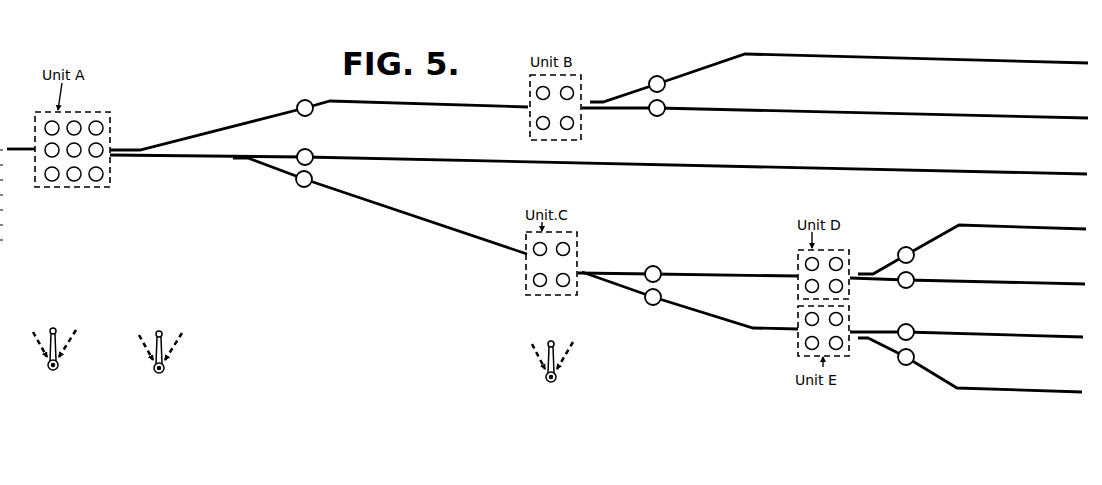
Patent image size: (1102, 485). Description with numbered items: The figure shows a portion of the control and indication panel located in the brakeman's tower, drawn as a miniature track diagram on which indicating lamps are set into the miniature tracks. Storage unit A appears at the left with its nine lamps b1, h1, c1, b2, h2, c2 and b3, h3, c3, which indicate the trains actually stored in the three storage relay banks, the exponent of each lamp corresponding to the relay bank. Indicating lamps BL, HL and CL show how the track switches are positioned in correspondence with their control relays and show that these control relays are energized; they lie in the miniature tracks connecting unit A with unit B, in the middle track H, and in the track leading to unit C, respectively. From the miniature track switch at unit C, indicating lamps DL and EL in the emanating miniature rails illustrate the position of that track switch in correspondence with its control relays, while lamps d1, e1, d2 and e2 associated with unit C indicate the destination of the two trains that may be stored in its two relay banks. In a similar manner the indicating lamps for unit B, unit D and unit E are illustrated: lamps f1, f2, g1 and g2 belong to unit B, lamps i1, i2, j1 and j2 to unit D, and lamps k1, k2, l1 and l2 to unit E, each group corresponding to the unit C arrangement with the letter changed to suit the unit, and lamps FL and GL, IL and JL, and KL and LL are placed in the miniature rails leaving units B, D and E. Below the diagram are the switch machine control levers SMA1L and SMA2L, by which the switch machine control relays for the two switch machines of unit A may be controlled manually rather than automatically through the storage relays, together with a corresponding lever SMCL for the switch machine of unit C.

The indicating lamp BL is at (311, 104).
The indicating lamp HL is at (312, 155).
The indicating lamp CL is at (312, 179).
The relay FL is at (662, 79).
The relay GL is at (665, 105).
The indicating lamp DL is at (661, 269).
The indicating lamp EL is at (661, 297).
The relay IL is at (906, 247).
The relay JL is at (913, 276).
The relay KL is at (912, 328).
The relay LL is at (914, 357).
The indicating lamp b1 is at (98, 120).
The indicating lamp b2 is at (74, 120).
The indicating lamp b3 is at (51, 120).
The indicating lamp h1 is at (101, 156).
The indicating lamp h2 is at (81, 149).
The indicating lamp h3 is at (45, 149).
The indicating lamp c1 is at (96, 181).
The indicating lamp c2 is at (73, 181).
The indicating lamp c3 is at (50, 181).
The contact f1 of unit B f1 is at (574, 94).
The contact f2 of unit B f2 is at (537, 92).
The contact g1 of unit B g1 is at (574, 127).
The contact g2 of unit B g2 is at (537, 122).
The indicating lamp d1 is at (570, 247).
The indicating lamp d2 is at (533, 244).
The indicating lamp e1 is at (565, 287).
The indicating lamp e2 is at (540, 287).
The contact i1 of unit D i1 is at (843, 262).
The contact i2 of unit D i2 is at (806, 261).
The contact j1 of unit D j1 is at (843, 288).
The contact j2 of unit D j2 is at (806, 287).
The contact k1 of unit E k1 is at (843, 318).
The contact k2 of unit E k2 is at (806, 319).
The contact l1 of unit E l1 is at (843, 343).
The contact l2 of unit E l2 is at (806, 343).
The switch machine control lever SMA1L is at (51, 333).
The switch machine control lever SMA2L is at (157, 336).
The switch machine lever SM C L SMCL is at (575, 361).